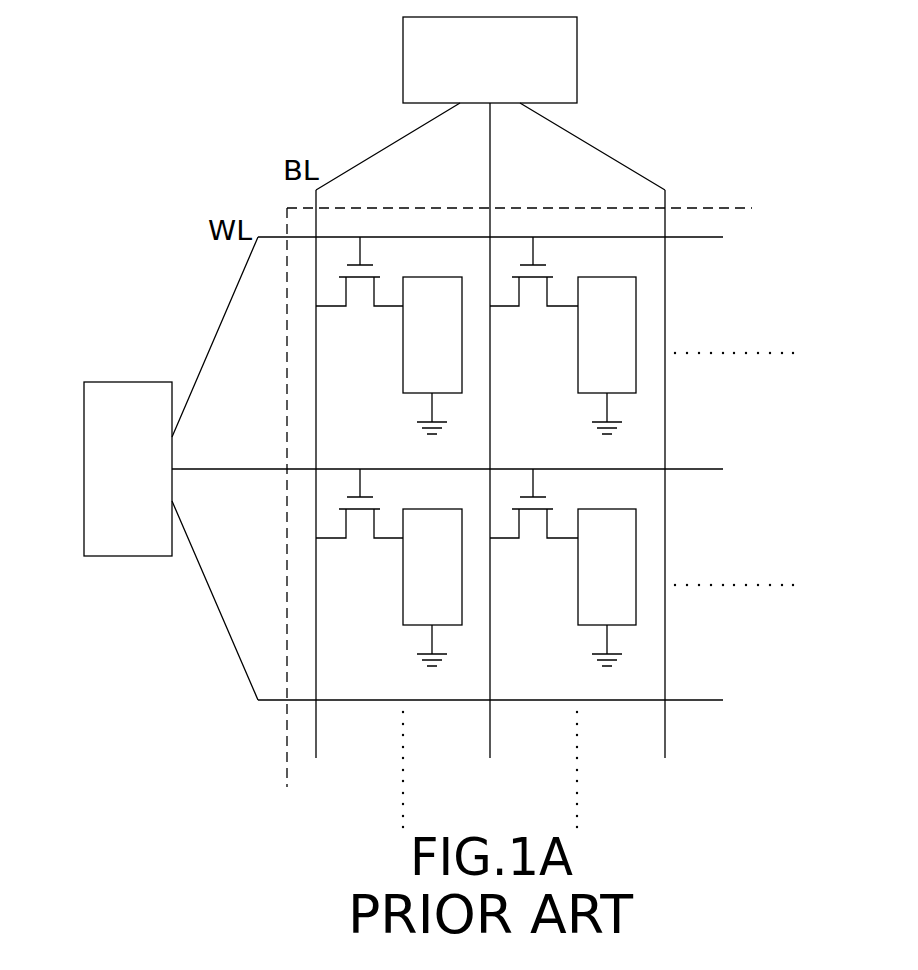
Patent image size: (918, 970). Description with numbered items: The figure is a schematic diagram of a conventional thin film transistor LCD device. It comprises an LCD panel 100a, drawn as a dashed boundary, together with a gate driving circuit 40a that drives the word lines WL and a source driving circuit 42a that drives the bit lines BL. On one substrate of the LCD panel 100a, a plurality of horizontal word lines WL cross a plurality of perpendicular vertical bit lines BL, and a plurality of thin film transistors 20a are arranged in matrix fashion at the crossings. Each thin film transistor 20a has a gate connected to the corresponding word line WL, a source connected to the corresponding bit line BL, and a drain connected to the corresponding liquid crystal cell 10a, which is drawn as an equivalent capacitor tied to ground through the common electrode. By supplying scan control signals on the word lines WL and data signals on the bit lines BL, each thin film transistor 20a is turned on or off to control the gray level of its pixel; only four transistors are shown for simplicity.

The source driving circuit 42a is at (572, 60).
The gate driving circuit 40a is at (128, 388).
The LCD panel 100a is at (695, 213).
The thin film transistor 20a is at (547, 271).
The liquid crystal cell 10a is at (585, 352).